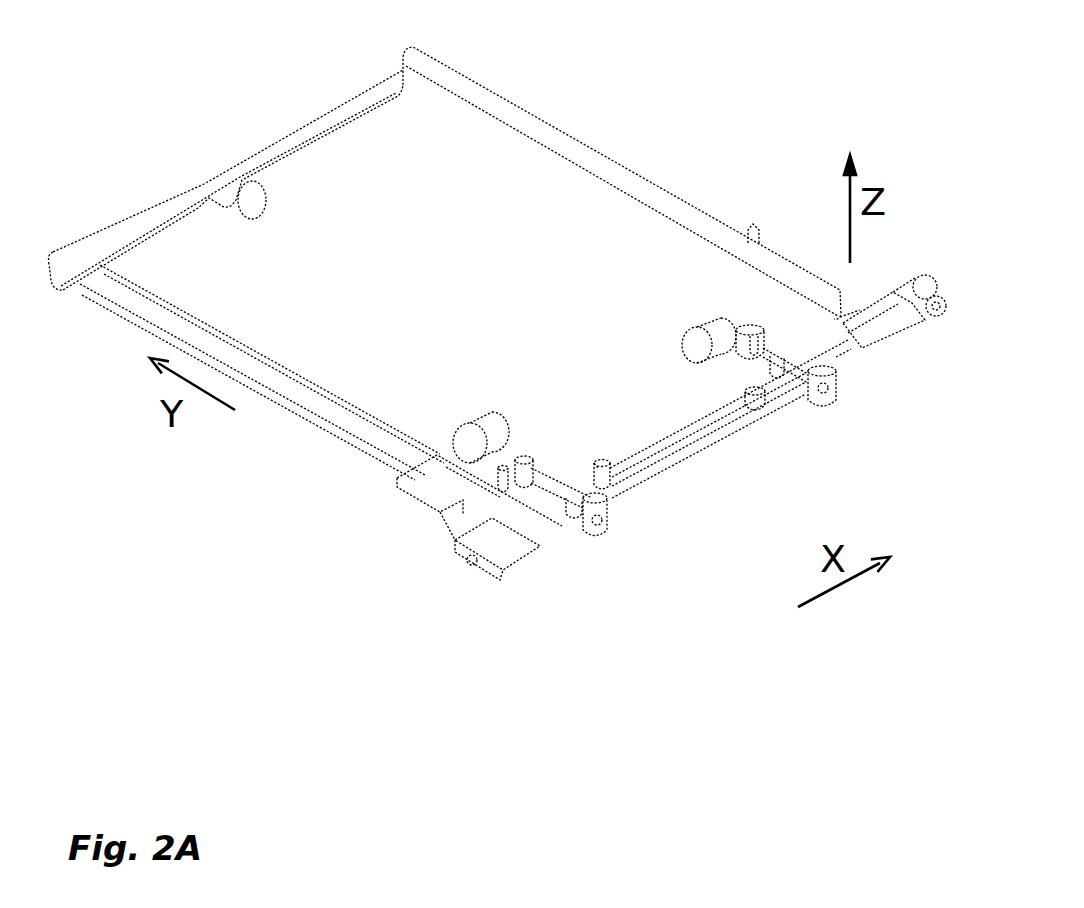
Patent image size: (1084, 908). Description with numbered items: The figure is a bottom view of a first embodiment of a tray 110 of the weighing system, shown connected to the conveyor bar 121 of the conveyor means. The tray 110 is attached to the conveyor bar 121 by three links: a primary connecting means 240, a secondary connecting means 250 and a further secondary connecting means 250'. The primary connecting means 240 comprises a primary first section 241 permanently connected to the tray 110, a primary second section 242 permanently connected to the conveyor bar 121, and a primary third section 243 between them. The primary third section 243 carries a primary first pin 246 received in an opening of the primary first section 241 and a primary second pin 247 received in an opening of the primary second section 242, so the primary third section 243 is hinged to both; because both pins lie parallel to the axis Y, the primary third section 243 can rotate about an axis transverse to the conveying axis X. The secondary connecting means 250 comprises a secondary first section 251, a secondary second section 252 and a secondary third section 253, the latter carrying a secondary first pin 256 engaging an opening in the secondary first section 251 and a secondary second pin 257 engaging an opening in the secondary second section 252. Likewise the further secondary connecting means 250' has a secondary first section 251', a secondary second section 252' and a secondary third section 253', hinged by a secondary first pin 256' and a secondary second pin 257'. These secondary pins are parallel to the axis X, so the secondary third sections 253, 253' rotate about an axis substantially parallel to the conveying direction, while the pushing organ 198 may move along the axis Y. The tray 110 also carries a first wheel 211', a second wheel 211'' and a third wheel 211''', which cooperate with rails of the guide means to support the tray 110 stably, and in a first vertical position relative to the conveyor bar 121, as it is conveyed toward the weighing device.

The tray 110 is at (563, 207).
The conveyor bar 121 is at (870, 350).
The pushing organ 198 is at (433, 507).
The first wheel 211' is at (282, 246).
The second wheel 211'' is at (432, 409).
The third wheel 211''' is at (684, 313).
The primary connecting means 240 is at (692, 469).
The primary first section 241 is at (597, 466).
The primary second section 242 is at (758, 393).
The primary third section 243 is at (695, 430).
The primary first pin 246 is at (602, 474).
The primary second pin 247 is at (748, 408).
The secondary connecting means 250 is at (804, 431).
The further secondary connecting means 250' is at (573, 560).
The secondary first section 251 is at (735, 213).
The secondary first section 251' is at (480, 394).
The secondary second section 252 is at (790, 275).
The secondary second section 252' is at (614, 535).
The secondary third section 253 is at (760, 245).
The secondary third section 253' is at (541, 428).
The secondary first pin 256 is at (713, 274).
The secondary first pin 256' is at (432, 549).
The secondary second pin 257 is at (853, 435).
The secondary second pin 257' is at (620, 617).